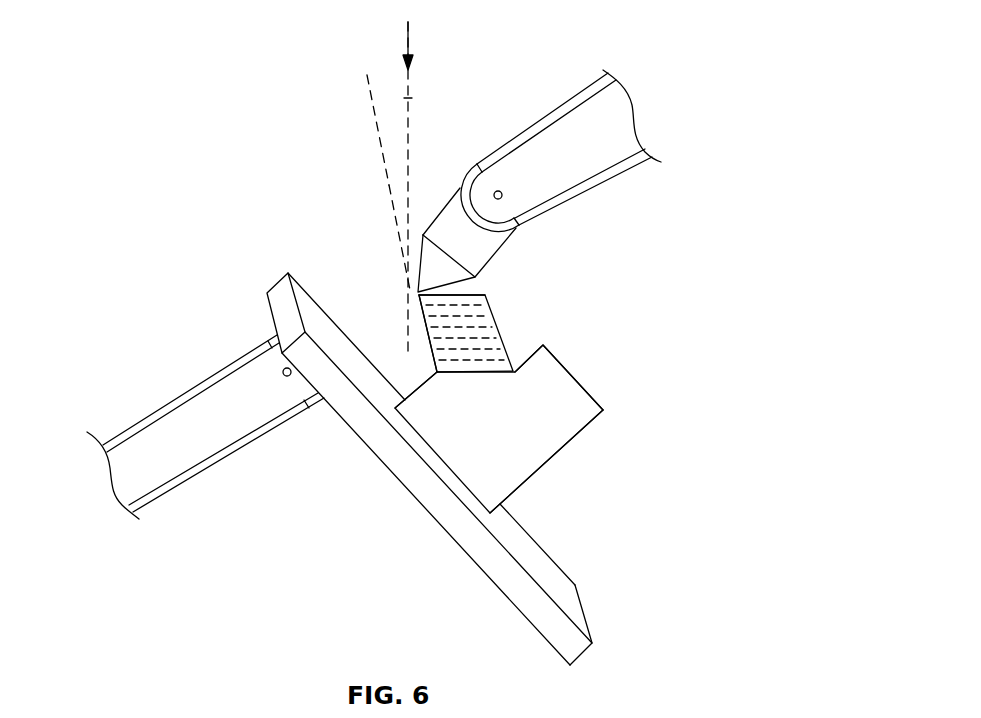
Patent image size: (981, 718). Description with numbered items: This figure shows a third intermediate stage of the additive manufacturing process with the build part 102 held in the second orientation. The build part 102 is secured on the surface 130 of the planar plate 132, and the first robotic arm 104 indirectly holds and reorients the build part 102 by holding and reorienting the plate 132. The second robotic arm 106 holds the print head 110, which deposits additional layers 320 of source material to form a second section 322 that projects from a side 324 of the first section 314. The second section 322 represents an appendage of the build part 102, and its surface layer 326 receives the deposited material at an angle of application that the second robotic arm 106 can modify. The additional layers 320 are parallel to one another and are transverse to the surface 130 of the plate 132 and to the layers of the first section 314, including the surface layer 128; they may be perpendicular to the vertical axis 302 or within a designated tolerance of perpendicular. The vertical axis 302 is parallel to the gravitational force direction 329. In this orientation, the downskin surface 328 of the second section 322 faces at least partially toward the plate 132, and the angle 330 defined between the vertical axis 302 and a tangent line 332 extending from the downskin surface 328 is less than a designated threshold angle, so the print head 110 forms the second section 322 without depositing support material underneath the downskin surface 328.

The build part 102 is at (497, 424).
The first robotic arm 104 is at (187, 417).
The second robotic arm 106 is at (570, 172).
The print head 110 is at (432, 222).
The surface layer 128 is at (568, 366).
The surface 130 is at (462, 469).
The plate 132 is at (552, 623).
The vertical axis 302 is at (410, 98).
The first section 314 is at (530, 452).
The additional layers 320 is at (496, 332).
The second section 322 is at (485, 312).
The side 324 is at (421, 388).
The surface layer 326 is at (477, 295).
The downskin surface 328 is at (426, 320).
The gravitational force direction 329 is at (410, 42).
The angle 330 is at (408, 173).
The tangent line 332 is at (376, 118).